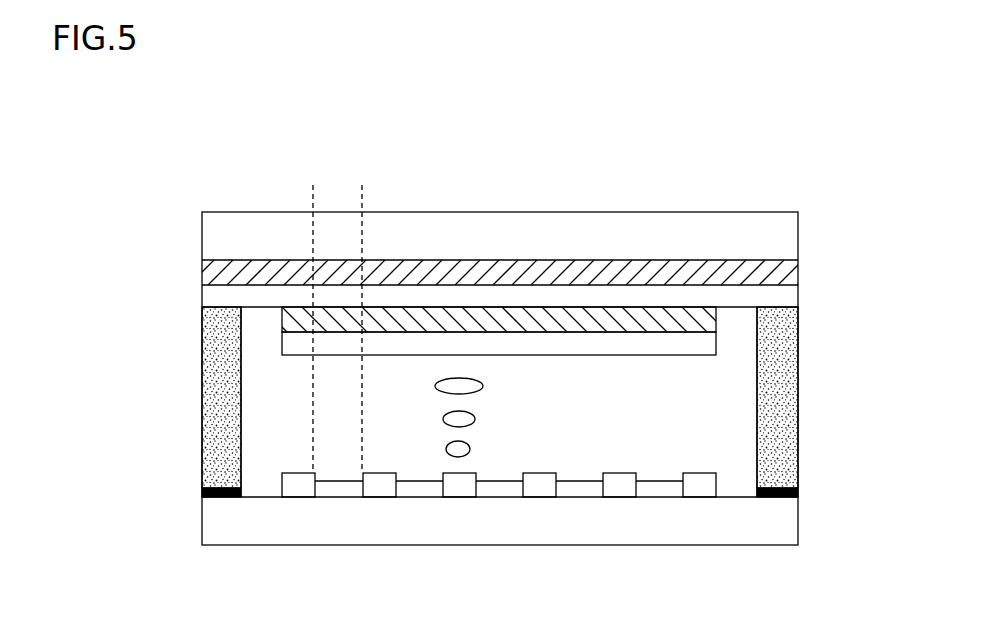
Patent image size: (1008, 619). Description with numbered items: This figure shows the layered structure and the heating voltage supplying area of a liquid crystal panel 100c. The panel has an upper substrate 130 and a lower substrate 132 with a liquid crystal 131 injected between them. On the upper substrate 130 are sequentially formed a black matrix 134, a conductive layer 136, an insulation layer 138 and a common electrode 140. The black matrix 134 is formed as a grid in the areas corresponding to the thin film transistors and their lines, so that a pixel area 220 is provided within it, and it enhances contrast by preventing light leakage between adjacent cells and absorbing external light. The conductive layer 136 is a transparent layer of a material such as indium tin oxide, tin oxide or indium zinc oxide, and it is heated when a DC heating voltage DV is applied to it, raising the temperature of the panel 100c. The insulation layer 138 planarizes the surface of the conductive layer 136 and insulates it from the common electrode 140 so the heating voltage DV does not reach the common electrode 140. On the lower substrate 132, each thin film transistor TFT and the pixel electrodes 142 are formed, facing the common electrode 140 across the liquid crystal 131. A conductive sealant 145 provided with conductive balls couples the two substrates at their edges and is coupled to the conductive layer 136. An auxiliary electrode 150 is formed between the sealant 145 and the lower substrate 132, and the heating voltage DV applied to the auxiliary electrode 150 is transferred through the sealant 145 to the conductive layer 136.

The panel 100c is at (752, 204).
The upper substrate 130 is at (783, 236).
The black matrix 134 is at (782, 266).
The conductive layer 136 is at (788, 298).
The insulation layer 138 is at (542, 323).
The common electrode 140 is at (638, 340).
The sealant 145 is at (781, 404).
The auxiliary electrode 150 is at (203, 488).
The lower substrate 132 is at (789, 524).
The pixel electrodes 142 is at (343, 490).
The thin film transistor TFT is at (299, 490).
The liquid crystal 131 is at (470, 449).
The pixel area 220 is at (362, 195).
The heating voltage DV is at (202, 493).